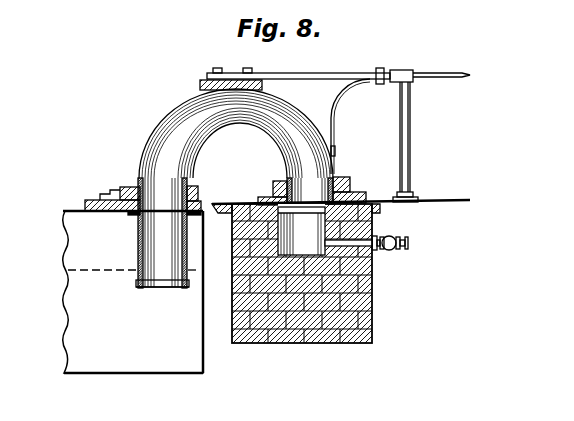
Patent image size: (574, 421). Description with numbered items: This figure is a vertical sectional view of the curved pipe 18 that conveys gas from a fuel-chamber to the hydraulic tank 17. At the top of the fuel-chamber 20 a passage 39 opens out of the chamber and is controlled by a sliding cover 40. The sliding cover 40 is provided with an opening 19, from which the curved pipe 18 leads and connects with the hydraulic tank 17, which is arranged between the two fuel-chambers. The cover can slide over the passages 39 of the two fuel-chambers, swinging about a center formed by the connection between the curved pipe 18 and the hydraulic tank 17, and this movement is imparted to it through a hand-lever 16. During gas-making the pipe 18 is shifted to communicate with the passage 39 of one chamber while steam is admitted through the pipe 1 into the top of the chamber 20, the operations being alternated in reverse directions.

The hand-lever 16 is at (338, 130).
The hydraulic tank 17 is at (133, 292).
The pipe 18 is at (234, 184).
The opening 19 is at (291, 193).
The chamber 20 is at (304, 273).
The passage 39 is at (301, 229).
The sliding cover 40 is at (352, 190).
The pipe 1 is at (405, 239).